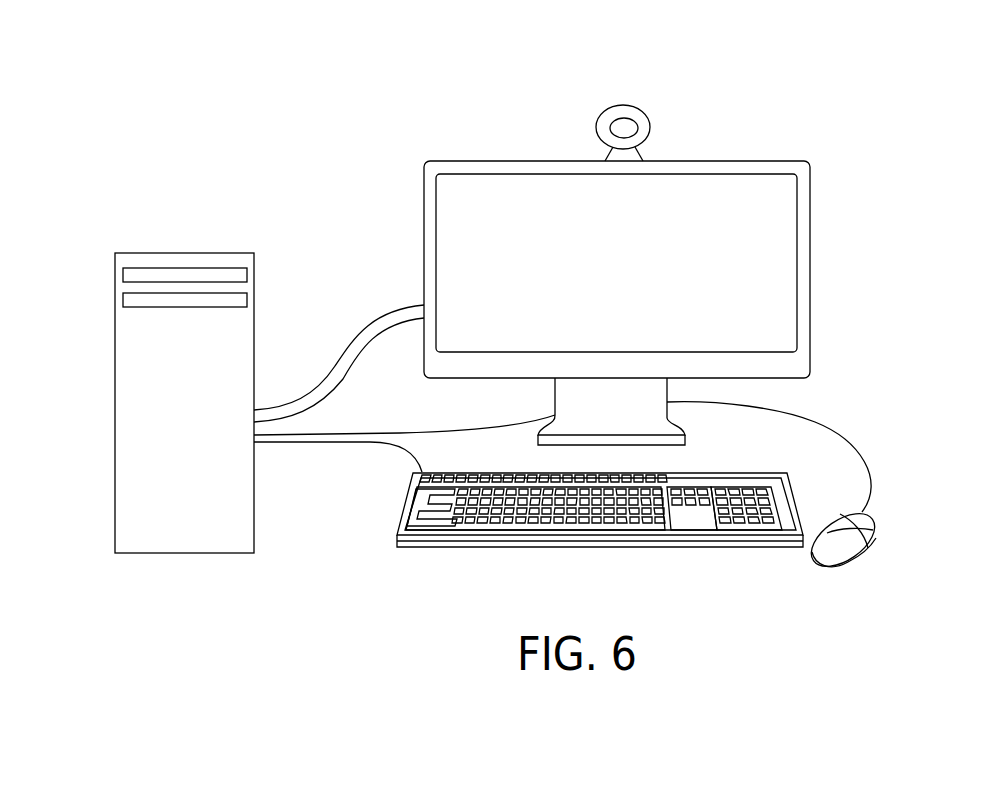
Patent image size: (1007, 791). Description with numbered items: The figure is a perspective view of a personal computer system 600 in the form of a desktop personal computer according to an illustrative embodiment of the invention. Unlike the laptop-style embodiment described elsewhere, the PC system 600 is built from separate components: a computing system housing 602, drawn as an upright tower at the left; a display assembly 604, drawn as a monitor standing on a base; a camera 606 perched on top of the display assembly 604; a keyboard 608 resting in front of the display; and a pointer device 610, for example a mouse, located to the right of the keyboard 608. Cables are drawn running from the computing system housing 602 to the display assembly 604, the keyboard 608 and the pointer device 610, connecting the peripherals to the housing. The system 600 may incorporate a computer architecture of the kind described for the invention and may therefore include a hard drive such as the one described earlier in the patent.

The personal computer system 600 is at (850, 92).
The computing system housing 602 is at (178, 253).
The display assembly 604 is at (810, 205).
The camera 606 is at (648, 113).
The keyboard 608 is at (403, 502).
The pointer device 610 is at (872, 548).